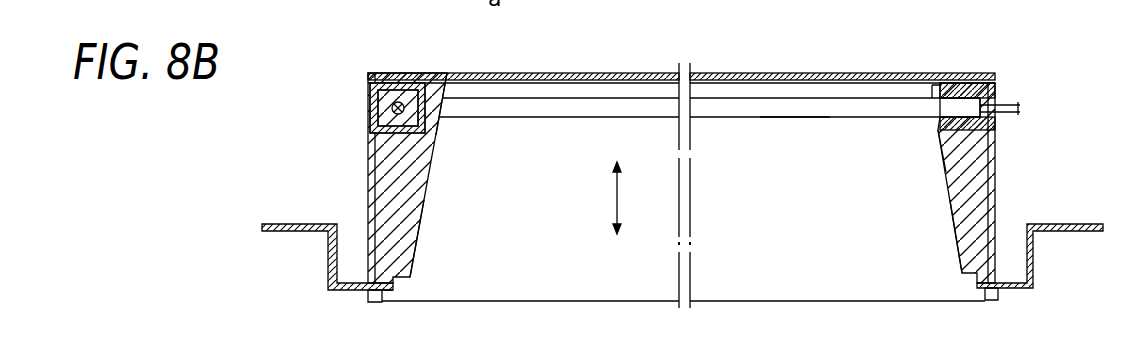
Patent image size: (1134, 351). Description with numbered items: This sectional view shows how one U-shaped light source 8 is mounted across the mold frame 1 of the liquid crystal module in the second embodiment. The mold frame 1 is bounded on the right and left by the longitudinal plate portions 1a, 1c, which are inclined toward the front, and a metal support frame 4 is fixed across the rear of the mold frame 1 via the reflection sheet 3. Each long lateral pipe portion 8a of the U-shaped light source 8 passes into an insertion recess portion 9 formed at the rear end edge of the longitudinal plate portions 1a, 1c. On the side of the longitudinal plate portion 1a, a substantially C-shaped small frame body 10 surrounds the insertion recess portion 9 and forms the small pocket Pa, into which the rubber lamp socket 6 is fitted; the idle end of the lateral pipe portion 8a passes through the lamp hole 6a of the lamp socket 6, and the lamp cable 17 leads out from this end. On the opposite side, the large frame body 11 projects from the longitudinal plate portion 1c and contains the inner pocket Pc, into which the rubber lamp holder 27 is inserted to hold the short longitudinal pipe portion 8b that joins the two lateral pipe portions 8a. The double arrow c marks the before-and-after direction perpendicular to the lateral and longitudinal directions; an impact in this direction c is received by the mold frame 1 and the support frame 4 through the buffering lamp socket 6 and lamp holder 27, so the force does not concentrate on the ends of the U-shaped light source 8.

The mold frame 1 is at (1035, 252).
The longitudinal plate portion 1a is at (951, 222).
The longitudinal plate portion 1c is at (419, 236).
The reflection sheet 3 is at (735, 87).
The support frame 4 is at (716, 78).
The lamp socket 6 is at (997, 102).
The lamp hole 6a is at (940, 110).
The U-shaped light source 8 is at (823, 118).
The lateral pipe portion 8a is at (792, 120).
The longitudinal pipe portion 8b is at (396, 102).
The insertion recess portion 9 is at (933, 93).
The small frame body 10 is at (994, 190).
The large frame body 11 is at (368, 163).
The lamp cable 17 is at (1020, 108).
The lamp holder 27 is at (370, 118).
The small pocket Pa is at (994, 131).
The inner pocket Pc is at (437, 110).
The before and after direction c is at (610, 198).